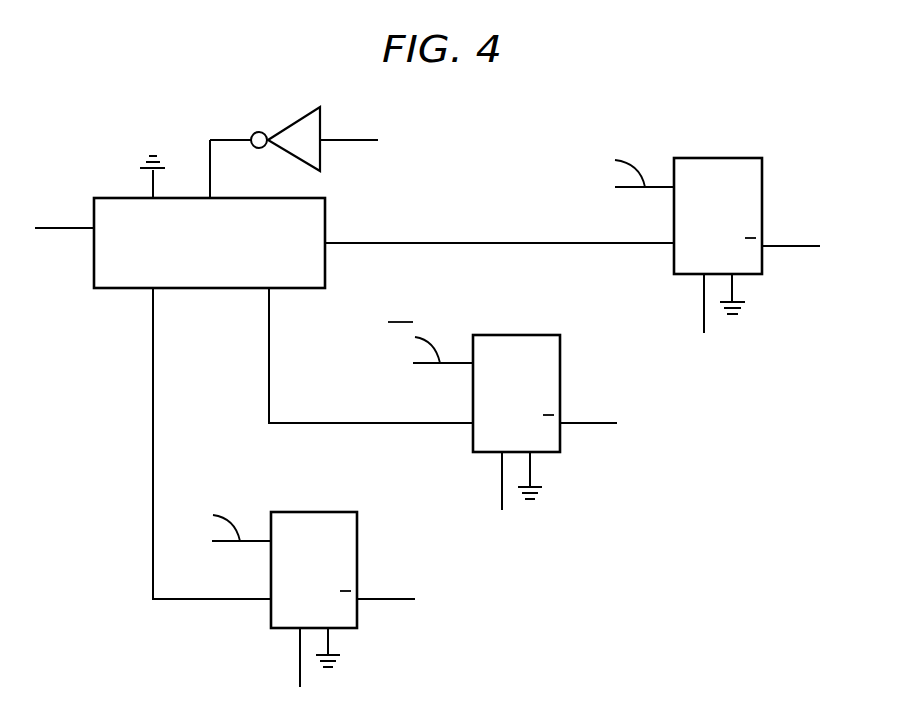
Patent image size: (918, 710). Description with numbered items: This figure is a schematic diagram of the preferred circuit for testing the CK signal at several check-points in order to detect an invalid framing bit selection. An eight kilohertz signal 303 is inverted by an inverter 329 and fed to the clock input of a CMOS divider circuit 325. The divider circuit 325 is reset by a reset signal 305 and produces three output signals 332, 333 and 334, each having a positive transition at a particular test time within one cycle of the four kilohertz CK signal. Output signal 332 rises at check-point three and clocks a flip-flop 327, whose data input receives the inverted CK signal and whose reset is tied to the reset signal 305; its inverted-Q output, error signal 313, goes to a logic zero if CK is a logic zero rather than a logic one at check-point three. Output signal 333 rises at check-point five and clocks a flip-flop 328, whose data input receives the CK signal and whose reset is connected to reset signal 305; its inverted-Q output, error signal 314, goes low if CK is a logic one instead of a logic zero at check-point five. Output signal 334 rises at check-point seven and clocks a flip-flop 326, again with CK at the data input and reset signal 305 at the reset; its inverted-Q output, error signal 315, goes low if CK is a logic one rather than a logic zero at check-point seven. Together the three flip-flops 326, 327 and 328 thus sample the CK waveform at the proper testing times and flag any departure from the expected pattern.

The divider circuit 325 is at (94, 198).
The inverter 329 is at (297, 122).
The 8-KHz signal 303 is at (348, 141).
The reset signal 305 is at (63, 228).
The divider output signal 333 is at (438, 243).
The divider output signal 334 is at (153, 350).
The divider output signal 332 is at (269, 350).
The flip-flop 328 is at (717, 158).
The flip-flop 327 is at (517, 335).
The flip-flop 326 is at (313, 512).
The error signal 314 is at (788, 246).
The error signal 313 is at (587, 423).
The error signal 315 is at (387, 599).